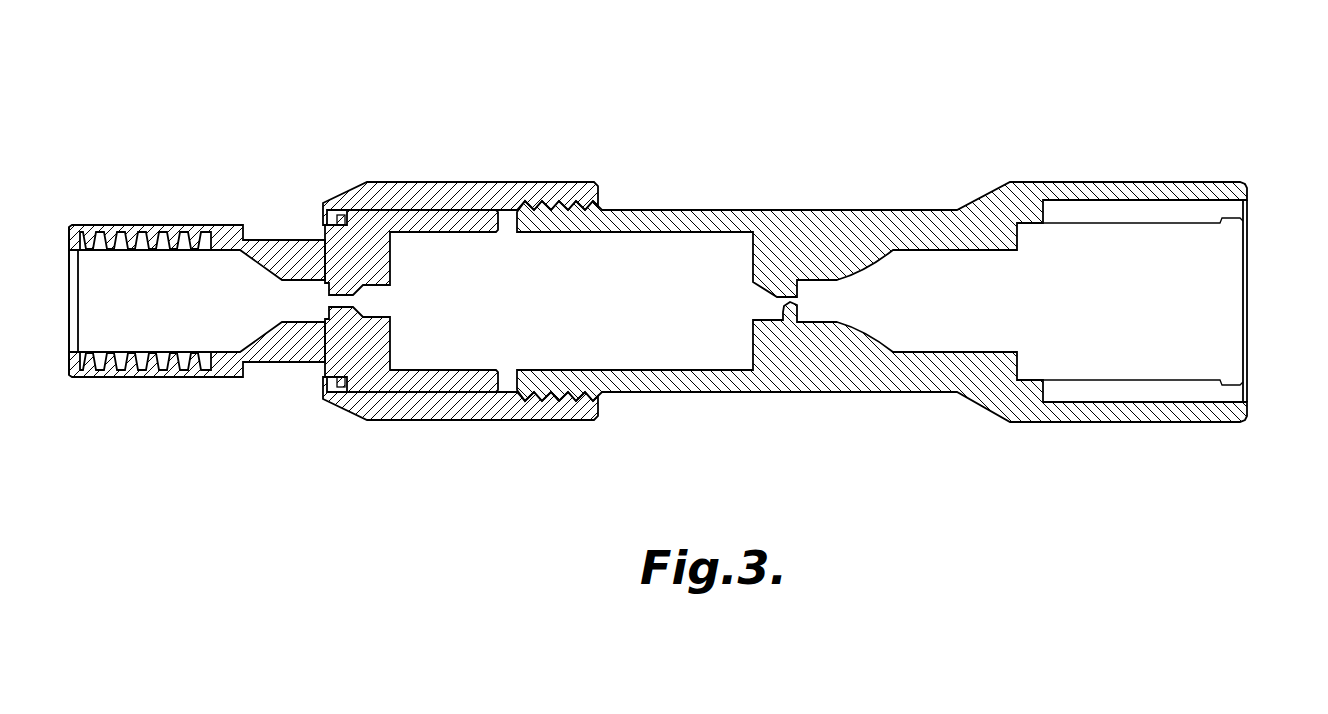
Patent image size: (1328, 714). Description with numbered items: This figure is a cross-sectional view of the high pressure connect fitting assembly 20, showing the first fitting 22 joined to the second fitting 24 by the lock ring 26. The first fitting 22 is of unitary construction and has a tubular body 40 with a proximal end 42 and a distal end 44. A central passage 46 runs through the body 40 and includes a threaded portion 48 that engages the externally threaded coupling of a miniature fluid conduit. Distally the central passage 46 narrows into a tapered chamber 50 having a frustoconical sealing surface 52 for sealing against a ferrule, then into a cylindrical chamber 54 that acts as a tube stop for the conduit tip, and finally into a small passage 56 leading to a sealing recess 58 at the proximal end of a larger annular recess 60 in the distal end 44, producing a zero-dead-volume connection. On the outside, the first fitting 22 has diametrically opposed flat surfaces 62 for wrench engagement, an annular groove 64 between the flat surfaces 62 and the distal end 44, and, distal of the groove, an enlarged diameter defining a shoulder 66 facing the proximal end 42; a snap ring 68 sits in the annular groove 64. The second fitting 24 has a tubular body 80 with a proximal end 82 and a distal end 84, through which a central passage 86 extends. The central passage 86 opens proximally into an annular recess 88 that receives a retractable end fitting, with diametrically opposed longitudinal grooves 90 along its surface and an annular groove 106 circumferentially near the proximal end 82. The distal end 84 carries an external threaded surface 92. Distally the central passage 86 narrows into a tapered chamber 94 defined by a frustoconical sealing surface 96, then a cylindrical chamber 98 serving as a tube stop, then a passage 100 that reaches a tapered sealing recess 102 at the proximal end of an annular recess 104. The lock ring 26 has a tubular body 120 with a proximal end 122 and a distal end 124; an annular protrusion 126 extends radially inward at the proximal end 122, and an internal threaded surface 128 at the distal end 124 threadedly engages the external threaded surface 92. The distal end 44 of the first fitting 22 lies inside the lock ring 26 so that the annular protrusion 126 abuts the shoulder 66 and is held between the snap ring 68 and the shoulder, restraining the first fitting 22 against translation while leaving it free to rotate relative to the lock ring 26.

The high pressure connect fitting assembly 20 is at (816, 92).
The first fitting 22 is at (151, 187).
The second fitting 24 is at (1119, 140).
The lock ring 26 is at (556, 183).
The tubular body 40 is at (120, 378).
The proximal end 42 is at (66, 358).
The distal end 44 is at (512, 397).
The central passage 46 is at (215, 283).
The threaded portion 48 is at (172, 357).
The tapered chamber 50 is at (250, 322).
The frustoconical sealing surface 52 is at (255, 270).
The cylindrical chamber 54 is at (303, 313).
The passage 56 is at (337, 270).
The sealing recess 58 is at (378, 280).
The annular recess 60 is at (440, 292).
The flat surfaces 62 is at (278, 238).
The annular groove 64 is at (333, 387).
The shoulder 66 is at (390, 205).
The snap ring 68 is at (350, 222).
The tubular body 80 is at (1210, 423).
The proximal end 82 is at (1255, 414).
The distal end 84 is at (532, 204).
The central passage 86 is at (960, 283).
The annular recess 88 is at (1165, 240).
The longitudinal grooves 90 is at (1075, 213).
The external threaded surface 92 is at (591, 196).
The tapered chamber 94 is at (858, 305).
The frustoconical sealing surface 96 is at (886, 290).
The cylindrical chamber 98 is at (818, 297).
The passage 100 is at (782, 318).
The tapered sealing recess 102 is at (763, 302).
The annular recess 104 is at (678, 275).
The annular groove 106 is at (1236, 216).
The tubular body 120 is at (537, 412).
The proximal end 122 is at (335, 213).
The distal end 124 is at (603, 407).
The annular protrusion 126 is at (362, 378).
The threaded surface 128 is at (586, 406).